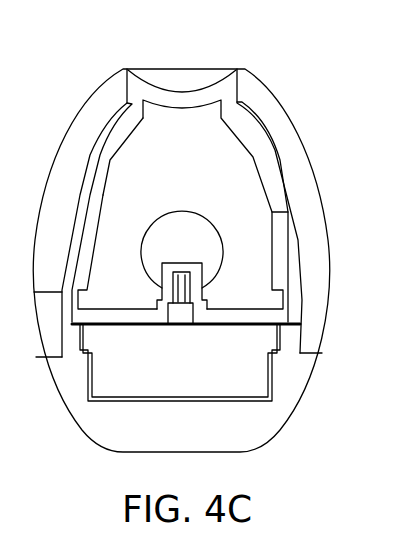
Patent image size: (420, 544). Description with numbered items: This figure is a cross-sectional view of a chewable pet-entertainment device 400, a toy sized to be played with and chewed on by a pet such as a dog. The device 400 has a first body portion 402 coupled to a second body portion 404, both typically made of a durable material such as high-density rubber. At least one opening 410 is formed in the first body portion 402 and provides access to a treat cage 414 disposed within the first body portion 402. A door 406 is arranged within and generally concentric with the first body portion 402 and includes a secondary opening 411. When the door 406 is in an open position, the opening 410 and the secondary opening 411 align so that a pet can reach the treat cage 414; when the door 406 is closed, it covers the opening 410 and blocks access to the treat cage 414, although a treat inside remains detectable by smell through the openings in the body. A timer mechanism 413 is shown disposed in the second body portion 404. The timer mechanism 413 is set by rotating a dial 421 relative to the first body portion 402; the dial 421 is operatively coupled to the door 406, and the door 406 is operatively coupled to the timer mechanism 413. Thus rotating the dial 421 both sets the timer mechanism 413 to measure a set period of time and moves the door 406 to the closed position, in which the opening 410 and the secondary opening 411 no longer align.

The chewable pet-entertainment device 400 is at (331, 72).
The first body portion 402 is at (313, 243).
The second body portion 404 is at (300, 388).
The door 406 is at (262, 158).
The opening 410 is at (86, 155).
The secondary opening 411 is at (110, 160).
The timer mechanism 413 is at (243, 378).
The treat cage 414 is at (240, 203).
The dial 421 is at (183, 78).